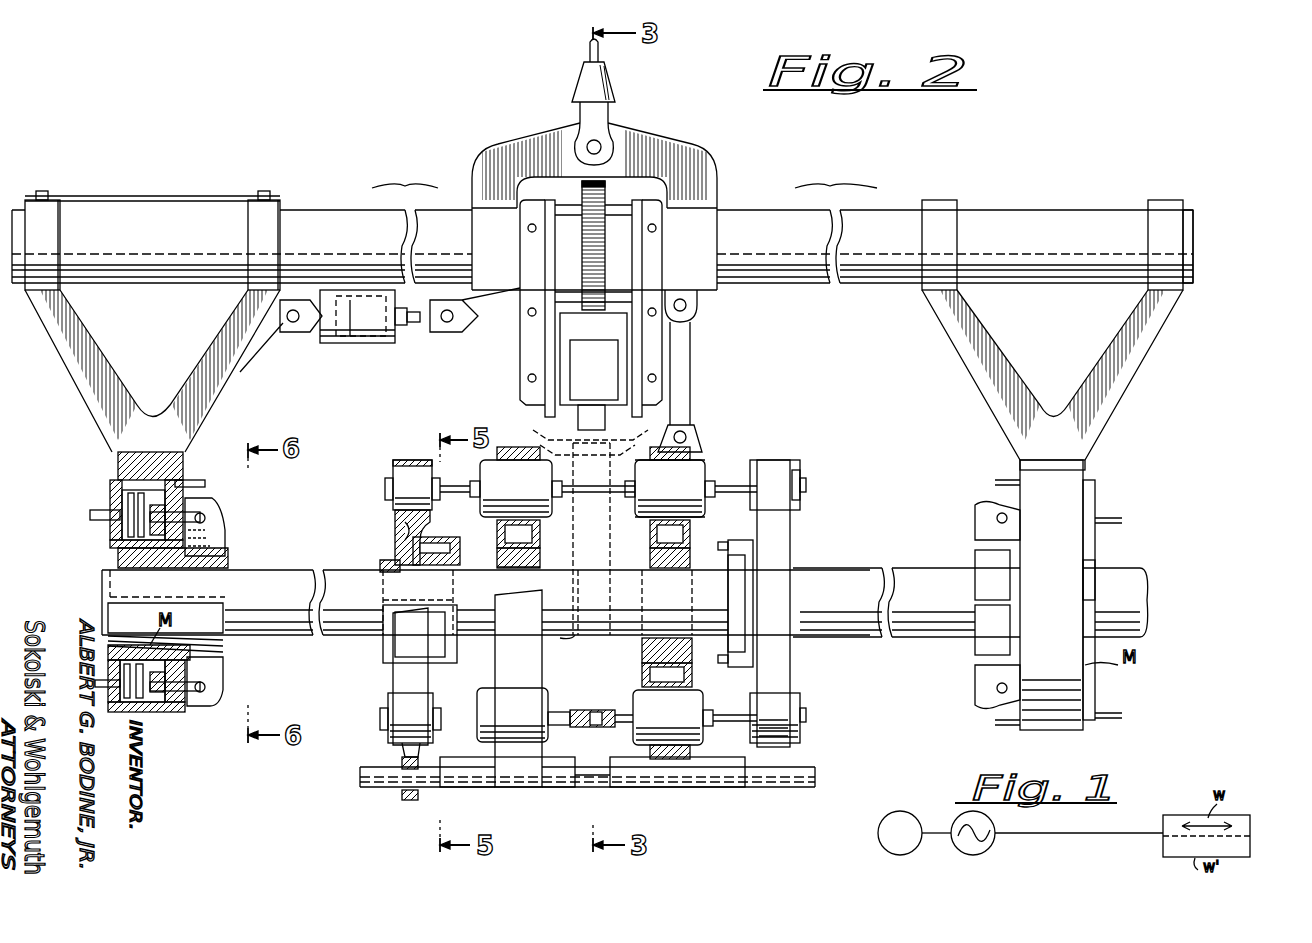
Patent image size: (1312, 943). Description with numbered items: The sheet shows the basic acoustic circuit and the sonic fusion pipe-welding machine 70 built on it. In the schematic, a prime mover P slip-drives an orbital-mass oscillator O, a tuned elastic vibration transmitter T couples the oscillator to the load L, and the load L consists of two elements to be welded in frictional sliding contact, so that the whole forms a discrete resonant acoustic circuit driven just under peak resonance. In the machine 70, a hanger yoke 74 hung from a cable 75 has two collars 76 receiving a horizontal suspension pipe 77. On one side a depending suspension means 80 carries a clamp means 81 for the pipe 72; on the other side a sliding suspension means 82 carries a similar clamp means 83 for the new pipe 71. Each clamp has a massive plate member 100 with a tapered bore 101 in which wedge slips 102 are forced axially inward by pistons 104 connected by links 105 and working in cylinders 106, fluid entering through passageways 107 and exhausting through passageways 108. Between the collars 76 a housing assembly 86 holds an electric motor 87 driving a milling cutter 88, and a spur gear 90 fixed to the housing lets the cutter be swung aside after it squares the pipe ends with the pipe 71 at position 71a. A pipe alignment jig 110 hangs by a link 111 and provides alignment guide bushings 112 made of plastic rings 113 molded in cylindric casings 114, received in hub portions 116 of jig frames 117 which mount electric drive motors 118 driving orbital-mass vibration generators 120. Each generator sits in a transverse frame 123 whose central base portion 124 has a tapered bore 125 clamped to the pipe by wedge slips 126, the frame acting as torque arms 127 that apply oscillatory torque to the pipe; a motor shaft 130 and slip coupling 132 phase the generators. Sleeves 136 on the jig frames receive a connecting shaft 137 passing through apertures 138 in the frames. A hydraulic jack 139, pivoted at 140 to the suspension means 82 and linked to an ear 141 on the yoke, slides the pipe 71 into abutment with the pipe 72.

In FIG. 2, the sonic fusion pipe-welding machine 70 is at (922, 190).
In FIG. 2, the pipe 71 is at (270, 580).
In FIG. 2, the dot-dash position of pipe end 71a is at (585, 641).
In FIG. 2, the pipe 72 is at (848, 568).
In FIG. 2, the hanger yoke 74 is at (530, 140).
In FIG. 2, the cable 75 is at (588, 51).
In FIG. 2, the collars 76 is at (480, 205).
In FIG. 2, the suspension pipe 77 is at (312, 210).
In FIG. 2, the suspension means 80 is at (1132, 375).
In FIG. 2, the clamp means 81 is at (1121, 559).
In FIG. 2, the suspension means 82 is at (98, 413).
In FIG. 2, the clamp means 83 is at (99, 474).
In FIG. 2, the housing assembly 86 is at (520, 353).
In FIG. 2, the electric motor 87 is at (604, 378).
In FIG. 2, the milling cutter 88 is at (598, 560).
In FIG. 2, the spur gear 90 is at (604, 183).
In FIG. 2, the plate member 100 is at (185, 706).
In FIG. 2, the tapered bore 101 is at (158, 568).
In FIG. 2, the wedge slips 102 is at (225, 546).
In FIG. 2, the pistons 104 is at (125, 505).
In FIG. 2, the links 105 is at (203, 512).
In FIG. 2, the cylinders 106 is at (128, 531).
In FIG. 2, the passageways 107 is at (180, 472).
In FIG. 2, the passageways 108 is at (92, 513).
In FIG. 2, the pipe alignment jig 110 is at (717, 461).
In FIG. 2, the link 111 is at (690, 400).
In FIG. 2, the alignment guide bushings 112 is at (540, 561).
In FIG. 2, the plastic rings 113 is at (540, 567).
In FIG. 2, the cylindric casings 114 is at (692, 684).
In FIG. 2, the hub portions 116 is at (538, 545).
In FIG. 2, the jig frames 117 is at (522, 452).
In FIG. 2, the electric drive motors 118 is at (530, 493).
In FIG. 2, the orbital-mass vibration generators 120 is at (393, 468).
In FIG. 2, the transverse frame 123 is at (385, 521).
In FIG. 2, the central base portion 124 is at (405, 541).
In FIG. 2, the tapered bore 125 is at (384, 562).
In FIG. 2, the wedge slips 126 is at (448, 546).
In FIG. 2, the torque arms 127 is at (408, 700).
In FIG. 2, the motor shaft 130 is at (556, 714).
In FIG. 2, the slip coupling 132 is at (598, 712).
In FIG. 2, the sleeves 136 is at (497, 790).
In FIG. 2, the connecting shaft 137 is at (598, 790).
In FIG. 2, the apertures 138 is at (410, 770).
In FIG. 2, the hydraulic jack 139 is at (346, 340).
In FIG. 2, the pivotal connection 140 is at (293, 323).
In FIG. 2, the ear 141 is at (447, 323).
In FIG. 1, the prime mover P is at (900, 833).
In FIG. 1, the oscillator O is at (988, 850).
In FIG. 1, the elastic vibration transmitter T is at (1050, 838).
In FIG. 1, the load L is at (1263, 832).